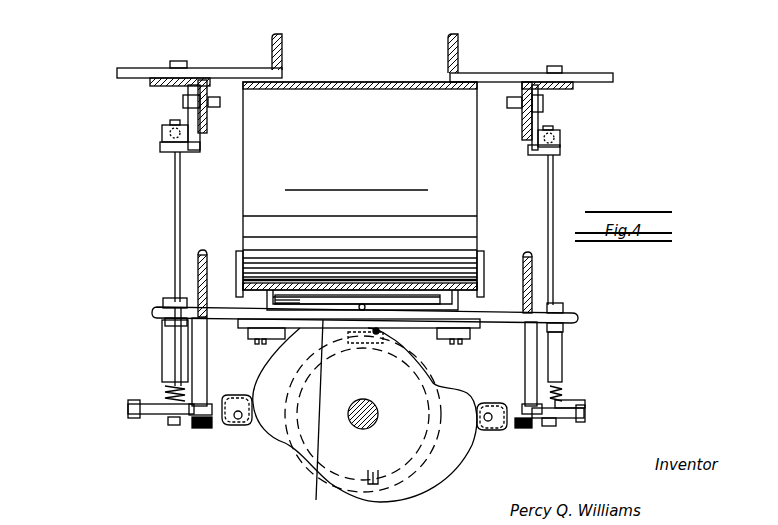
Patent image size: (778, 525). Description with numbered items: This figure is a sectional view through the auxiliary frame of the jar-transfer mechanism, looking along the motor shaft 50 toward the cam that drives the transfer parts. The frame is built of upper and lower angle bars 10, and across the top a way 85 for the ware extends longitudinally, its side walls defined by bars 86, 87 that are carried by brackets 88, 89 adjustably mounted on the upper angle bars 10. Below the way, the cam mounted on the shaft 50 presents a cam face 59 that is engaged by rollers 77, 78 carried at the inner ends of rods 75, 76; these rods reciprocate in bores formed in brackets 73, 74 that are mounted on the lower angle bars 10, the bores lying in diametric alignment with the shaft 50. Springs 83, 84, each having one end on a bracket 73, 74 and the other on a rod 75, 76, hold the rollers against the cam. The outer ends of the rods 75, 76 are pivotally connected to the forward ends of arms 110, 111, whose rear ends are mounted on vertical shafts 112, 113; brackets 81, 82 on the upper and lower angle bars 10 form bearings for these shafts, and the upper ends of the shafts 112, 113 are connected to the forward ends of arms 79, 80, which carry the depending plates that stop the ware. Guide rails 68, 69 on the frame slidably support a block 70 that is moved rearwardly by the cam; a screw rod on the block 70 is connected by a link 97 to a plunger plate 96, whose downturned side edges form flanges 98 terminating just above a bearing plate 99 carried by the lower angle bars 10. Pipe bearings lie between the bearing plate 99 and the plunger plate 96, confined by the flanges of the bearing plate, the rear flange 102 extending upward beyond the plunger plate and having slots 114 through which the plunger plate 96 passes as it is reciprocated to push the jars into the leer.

The angle bars 10 is at (165, 88).
The shaft 50 is at (360, 428).
The cam face 59 is at (300, 462).
The guide rail 68 is at (480, 322).
The guide rail 69 is at (240, 323).
The block 70 is at (310, 419).
The bracket 73 is at (525, 350).
The bracket 74 is at (176, 345).
The rod 75 is at (565, 420).
The rod 76 is at (160, 415).
The roller 77 is at (492, 432).
The roller 78 is at (238, 426).
The arm 79 is at (562, 138).
The arm 80 is at (165, 136).
The bracket 81 is at (165, 152).
The bracket 82 is at (165, 356).
The spring 83 is at (562, 398).
The spring 84 is at (165, 393).
The way 85 is at (360, 171).
The bar 86 is at (448, 58).
The bar 87 is at (283, 50).
The bracket 88 is at (490, 73).
The bracket 89 is at (212, 68).
The plunger plate 96 is at (268, 298).
The link 97 is at (272, 305).
The flanges 98 is at (255, 290).
The bearing plate 99 is at (160, 322).
The rear flange 102 is at (527, 300).
The arm 110 is at (575, 412).
The arm 111 is at (130, 408).
The vertical shaft 112 is at (553, 205).
The vertical shaft 113 is at (176, 210).
The slots 114 is at (457, 293).